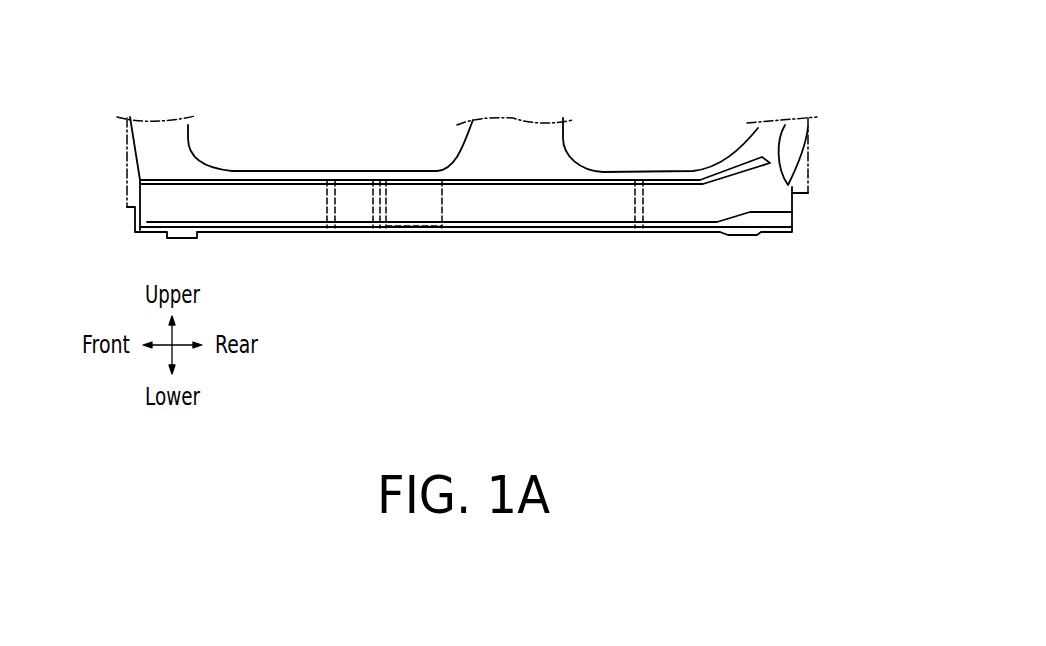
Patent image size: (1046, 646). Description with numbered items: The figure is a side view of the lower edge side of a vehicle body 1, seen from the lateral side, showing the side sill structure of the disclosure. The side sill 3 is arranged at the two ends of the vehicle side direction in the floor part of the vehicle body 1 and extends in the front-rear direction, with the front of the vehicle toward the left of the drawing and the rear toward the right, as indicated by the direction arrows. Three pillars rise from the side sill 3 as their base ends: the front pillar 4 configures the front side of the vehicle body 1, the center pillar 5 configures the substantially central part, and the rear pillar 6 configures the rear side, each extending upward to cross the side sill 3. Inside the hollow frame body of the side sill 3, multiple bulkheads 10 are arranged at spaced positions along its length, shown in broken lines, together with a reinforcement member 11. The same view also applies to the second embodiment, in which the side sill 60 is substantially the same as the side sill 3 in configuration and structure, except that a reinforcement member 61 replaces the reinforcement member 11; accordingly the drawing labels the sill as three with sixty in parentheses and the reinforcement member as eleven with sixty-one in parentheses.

The vehicle body 1 is at (364, 68).
The side sill 3 is at (466, 150).
The side sill 60 is at (311, 165).
The front pillar 4 is at (177, 130).
The center pillar 5 is at (515, 135).
The rear pillar 6 is at (752, 140).
The bulkhead 10 is at (372, 236).
The reinforcement member 11 is at (441, 249).
The reinforcement member 61 is at (412, 236).